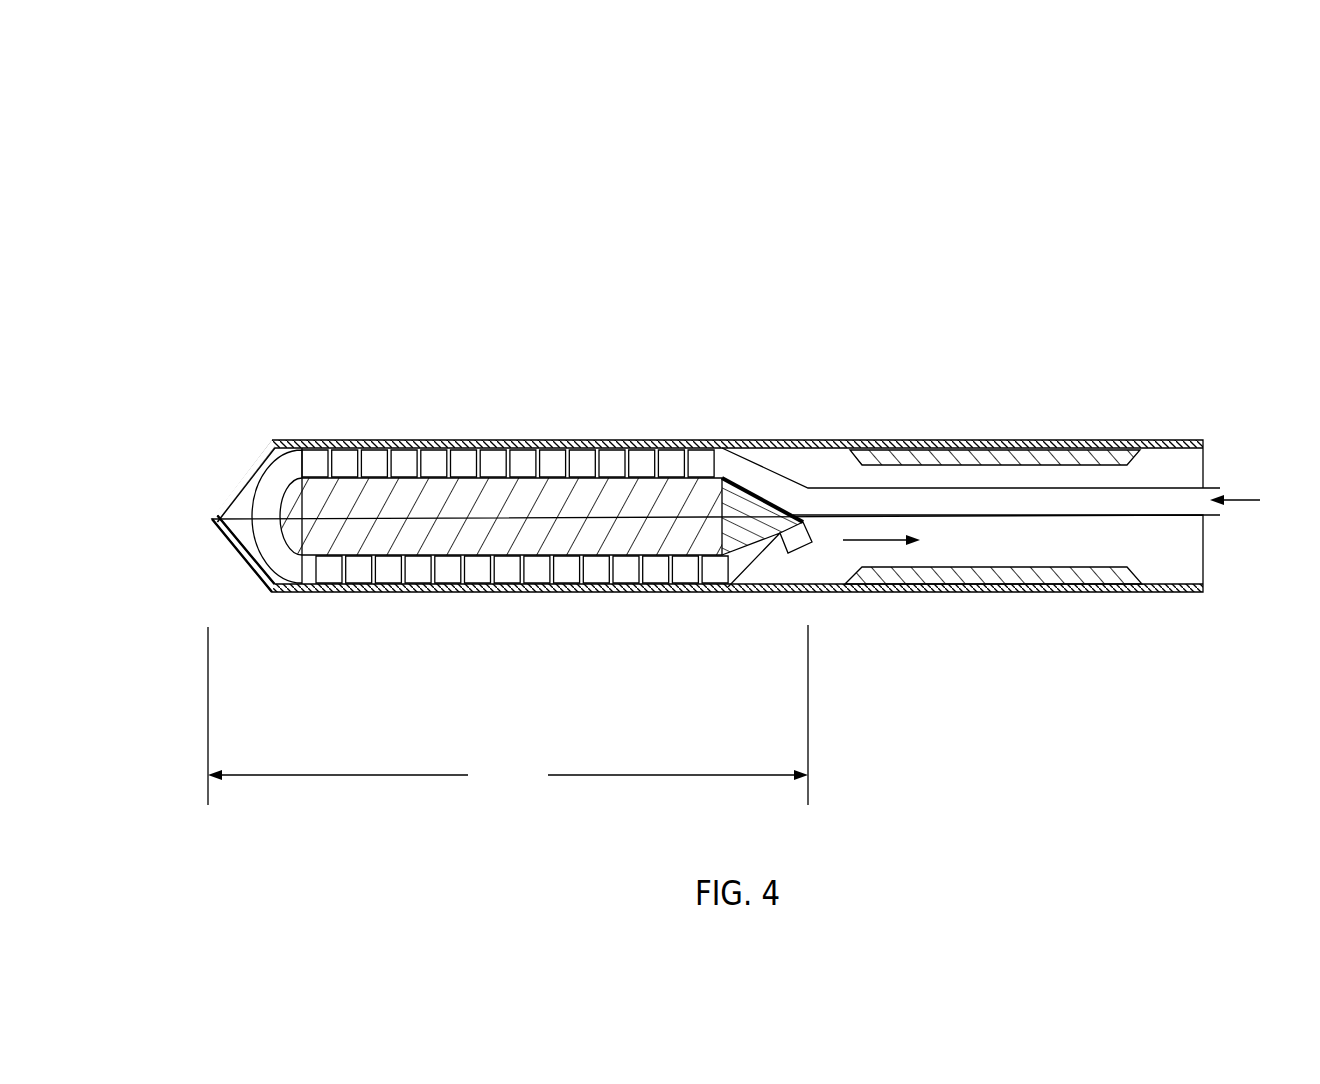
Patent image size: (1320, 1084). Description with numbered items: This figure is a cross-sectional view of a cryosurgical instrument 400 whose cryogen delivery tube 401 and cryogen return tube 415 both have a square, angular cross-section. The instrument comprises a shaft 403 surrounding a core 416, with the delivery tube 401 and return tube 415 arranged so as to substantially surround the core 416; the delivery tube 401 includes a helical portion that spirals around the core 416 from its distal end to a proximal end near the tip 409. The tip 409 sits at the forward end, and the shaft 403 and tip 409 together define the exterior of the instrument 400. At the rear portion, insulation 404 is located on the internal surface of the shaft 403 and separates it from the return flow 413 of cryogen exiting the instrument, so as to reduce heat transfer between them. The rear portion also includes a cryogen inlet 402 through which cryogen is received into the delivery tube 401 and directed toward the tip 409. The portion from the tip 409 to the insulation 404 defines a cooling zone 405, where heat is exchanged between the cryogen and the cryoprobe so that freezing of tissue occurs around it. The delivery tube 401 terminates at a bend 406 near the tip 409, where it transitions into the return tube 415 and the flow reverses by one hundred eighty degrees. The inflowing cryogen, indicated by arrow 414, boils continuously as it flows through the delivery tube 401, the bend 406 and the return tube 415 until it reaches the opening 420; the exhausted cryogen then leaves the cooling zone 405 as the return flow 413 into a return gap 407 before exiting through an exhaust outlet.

The cryosurgical instrument 400 is at (471, 203).
The cryogen delivery tube 401 is at (704, 462).
The cryogen inlet 402 is at (1183, 497).
The shaft 403 is at (1052, 450).
The insulation 404 is at (960, 458).
The cooling zone 405 is at (508, 715).
The bend 406 is at (267, 494).
The return gap 407 is at (1082, 542).
The tip 409 is at (217, 526).
The return flow 413 is at (880, 542).
The inflowing cryogen 414 is at (1263, 499).
The cryogen return tube 415 is at (657, 572).
The core 416 is at (610, 462).
The opening 420 is at (796, 545).